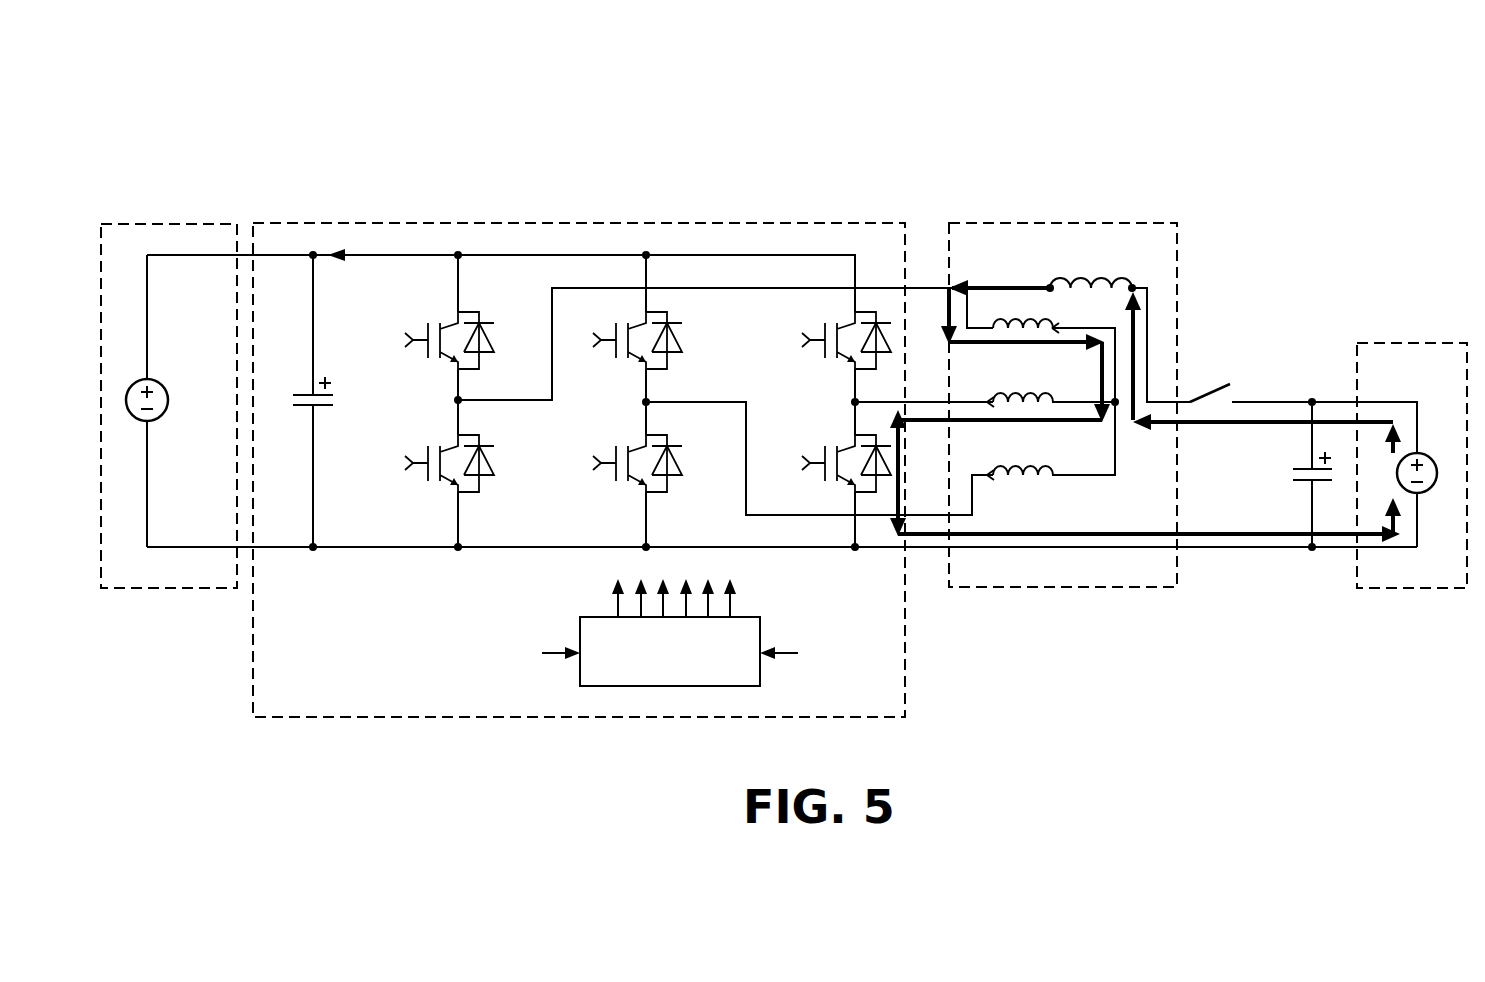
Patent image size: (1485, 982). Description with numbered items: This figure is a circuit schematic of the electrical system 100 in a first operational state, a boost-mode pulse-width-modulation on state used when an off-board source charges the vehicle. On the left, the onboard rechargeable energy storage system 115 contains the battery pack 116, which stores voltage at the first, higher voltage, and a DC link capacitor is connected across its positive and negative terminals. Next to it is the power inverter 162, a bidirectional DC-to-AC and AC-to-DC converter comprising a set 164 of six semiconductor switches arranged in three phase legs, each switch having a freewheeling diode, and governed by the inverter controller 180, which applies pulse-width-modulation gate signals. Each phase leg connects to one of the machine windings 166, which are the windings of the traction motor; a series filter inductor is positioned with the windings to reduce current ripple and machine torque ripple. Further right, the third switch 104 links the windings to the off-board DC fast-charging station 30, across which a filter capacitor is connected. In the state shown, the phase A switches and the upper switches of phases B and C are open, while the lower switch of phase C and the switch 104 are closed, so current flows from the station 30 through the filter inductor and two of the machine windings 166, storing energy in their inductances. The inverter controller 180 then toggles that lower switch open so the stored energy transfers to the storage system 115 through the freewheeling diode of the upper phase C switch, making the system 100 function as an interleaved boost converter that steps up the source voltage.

The electrical system 100 is at (1158, 98).
The rechargeable energy storage system 115 is at (190, 223).
The battery pack 116 is at (162, 381).
The power inverter 162 is at (699, 200).
The set of semiconductor switches 164 is at (552, 223).
The machine windings 166 is at (1066, 205).
The third switch 104 is at (1207, 385).
The DC fast-charging station 30 is at (1341, 326).
The inverter controller 180 is at (680, 662).